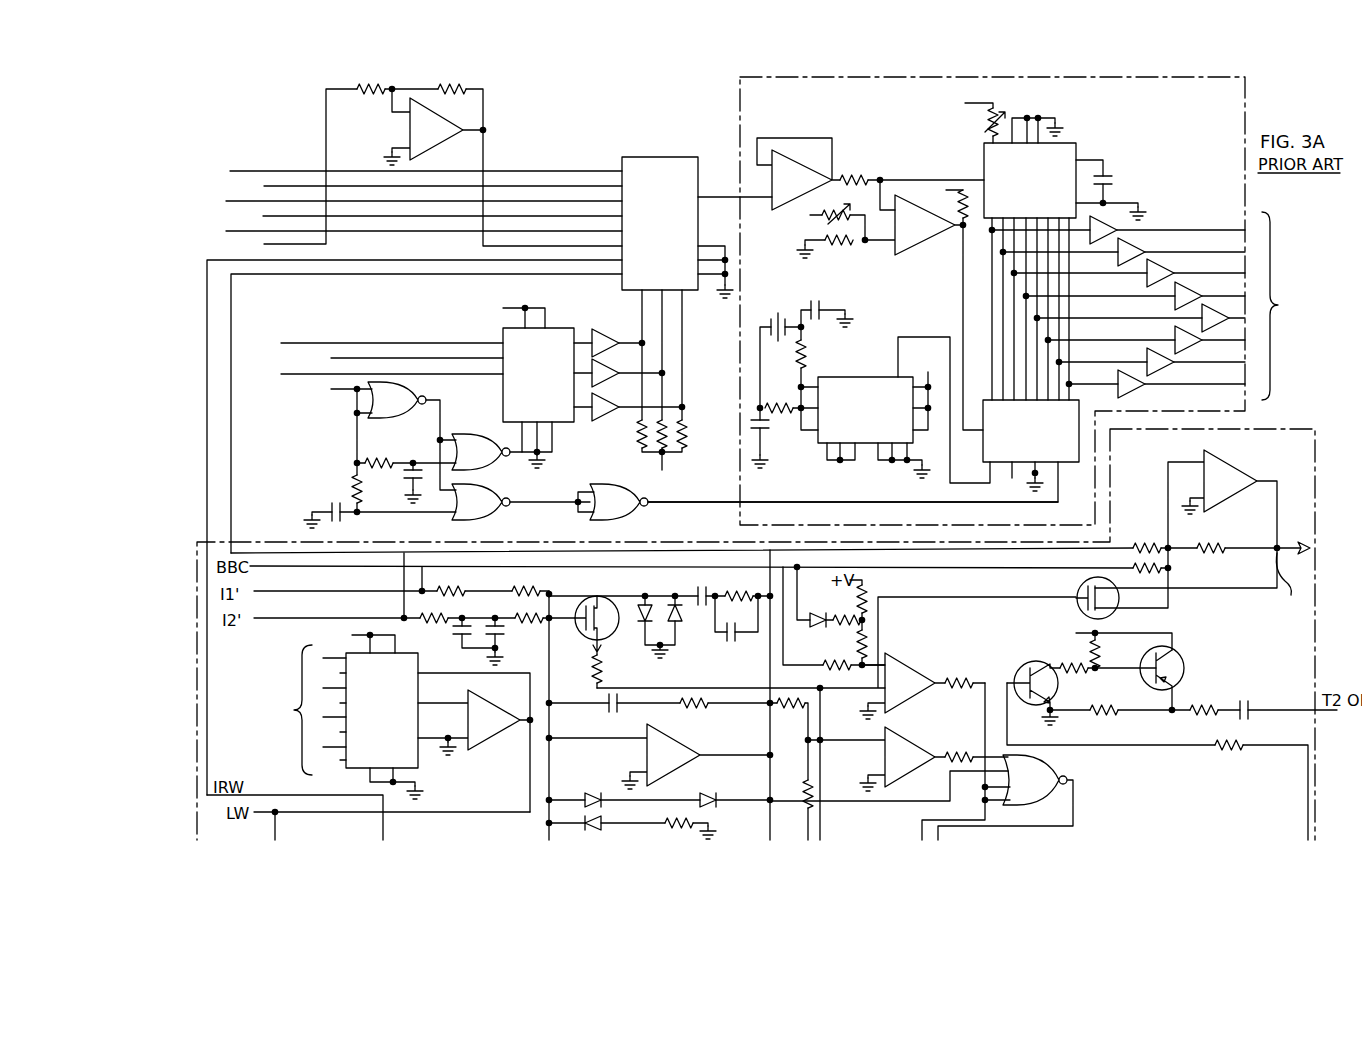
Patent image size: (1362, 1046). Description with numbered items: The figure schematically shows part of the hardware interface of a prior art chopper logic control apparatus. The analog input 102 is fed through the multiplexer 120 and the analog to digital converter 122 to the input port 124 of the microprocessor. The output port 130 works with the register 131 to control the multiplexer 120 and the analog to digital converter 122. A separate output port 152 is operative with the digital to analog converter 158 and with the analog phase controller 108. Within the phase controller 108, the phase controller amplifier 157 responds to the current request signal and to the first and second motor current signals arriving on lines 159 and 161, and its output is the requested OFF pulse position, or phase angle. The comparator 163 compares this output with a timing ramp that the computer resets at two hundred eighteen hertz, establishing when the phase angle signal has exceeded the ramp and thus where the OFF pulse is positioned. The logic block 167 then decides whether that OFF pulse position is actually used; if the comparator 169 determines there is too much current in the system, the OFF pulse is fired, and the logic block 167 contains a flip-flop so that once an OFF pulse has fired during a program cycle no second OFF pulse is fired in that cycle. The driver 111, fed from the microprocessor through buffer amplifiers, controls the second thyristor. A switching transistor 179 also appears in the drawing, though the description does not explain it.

The analog input 102 is at (245, 148).
The multiplexer 120 is at (649, 157).
The analog to digital converter 122 is at (741, 120).
The input port 124 is at (1319, 280).
The output port 130 is at (275, 328).
The register 131 is at (503, 342).
The analog phase controller 108 is at (1315, 462).
The output port 152 is at (288, 685).
The digital to analog converter 158 is at (420, 667).
The line 159 is at (294, 594).
The line 161 is at (318, 618).
The field effect transistor switch 179 is at (597, 597).
The phase controller amplifier 157 is at (668, 744).
The comparator 169 is at (918, 662).
The comparator 163 is at (918, 738).
The logic block 167 is at (1115, 813).
The driver 111 is at (1114, 698).